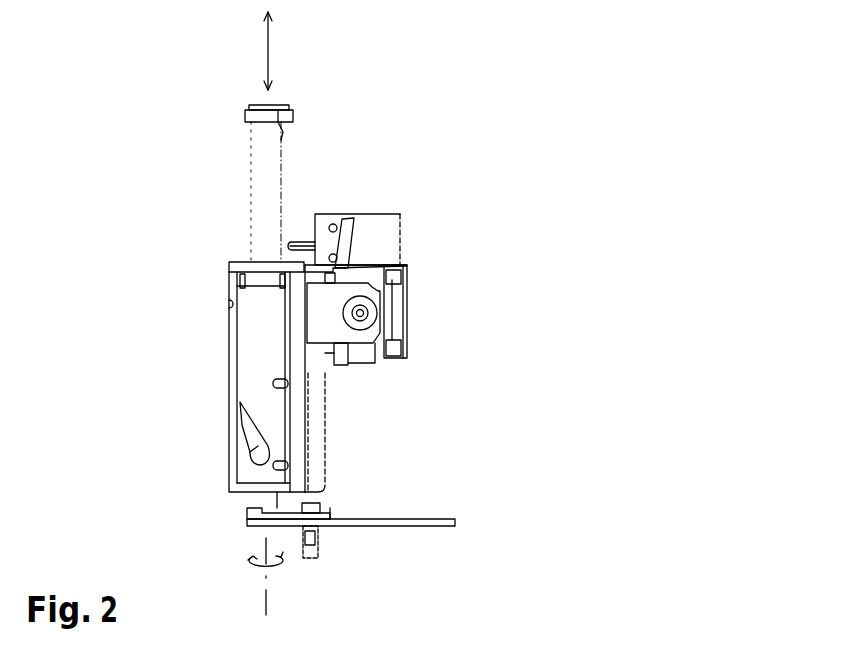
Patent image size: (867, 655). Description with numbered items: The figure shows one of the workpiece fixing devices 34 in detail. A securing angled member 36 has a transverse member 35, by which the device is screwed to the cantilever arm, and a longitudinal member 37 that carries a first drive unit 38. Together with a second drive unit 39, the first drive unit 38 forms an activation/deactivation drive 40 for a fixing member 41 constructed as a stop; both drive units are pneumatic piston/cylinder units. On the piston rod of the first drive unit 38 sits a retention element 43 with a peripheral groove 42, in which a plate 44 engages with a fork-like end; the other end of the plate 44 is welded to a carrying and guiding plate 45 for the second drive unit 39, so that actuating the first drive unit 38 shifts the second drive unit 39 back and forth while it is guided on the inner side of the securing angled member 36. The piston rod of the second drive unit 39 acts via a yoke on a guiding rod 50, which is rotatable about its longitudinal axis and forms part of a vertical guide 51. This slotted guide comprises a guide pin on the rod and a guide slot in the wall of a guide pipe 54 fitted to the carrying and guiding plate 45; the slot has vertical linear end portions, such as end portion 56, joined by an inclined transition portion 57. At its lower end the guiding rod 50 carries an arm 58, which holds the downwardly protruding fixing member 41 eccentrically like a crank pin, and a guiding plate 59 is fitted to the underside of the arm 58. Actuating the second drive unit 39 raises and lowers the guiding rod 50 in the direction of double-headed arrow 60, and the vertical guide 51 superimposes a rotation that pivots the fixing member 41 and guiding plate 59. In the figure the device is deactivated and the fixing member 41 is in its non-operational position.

The workpiece fixing device 34 is at (411, 166).
The transverse member 35 is at (325, 218).
The securing angled member 36 is at (410, 214).
The longitudinal member 37 is at (378, 242).
The first drive unit 38 is at (420, 297).
The second drive unit 39 is at (216, 319).
The activation/deactivation drive 40 is at (200, 327).
The fixing member 41 is at (305, 555).
The peripheral groove 42 is at (373, 317).
The retention element 43 is at (379, 320).
The plate 44 is at (430, 375).
The carrying and guiding plate 45 is at (429, 378).
The guiding rod 50 is at (206, 179).
The vertical guide 51 is at (253, 170).
The guide pipe 54 is at (275, 337).
The end portion 56 is at (252, 452).
The transition portion 57 is at (241, 412).
The arm 58 is at (312, 515).
The guiding plate 59 is at (400, 526).
The double-headed arrow 60 is at (272, 55).